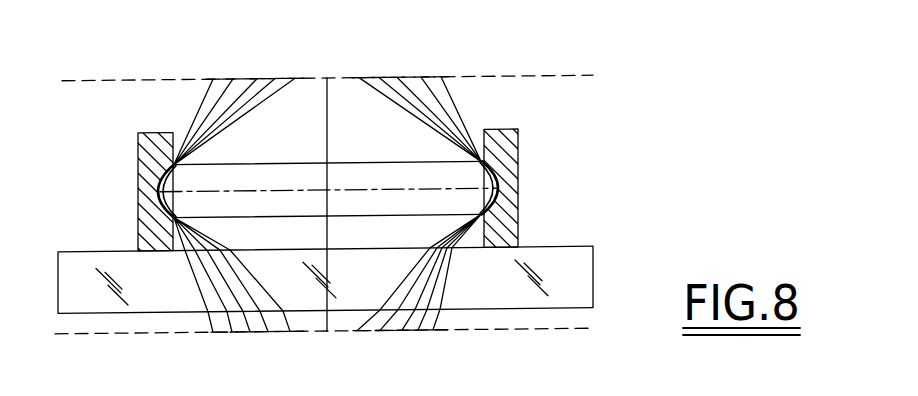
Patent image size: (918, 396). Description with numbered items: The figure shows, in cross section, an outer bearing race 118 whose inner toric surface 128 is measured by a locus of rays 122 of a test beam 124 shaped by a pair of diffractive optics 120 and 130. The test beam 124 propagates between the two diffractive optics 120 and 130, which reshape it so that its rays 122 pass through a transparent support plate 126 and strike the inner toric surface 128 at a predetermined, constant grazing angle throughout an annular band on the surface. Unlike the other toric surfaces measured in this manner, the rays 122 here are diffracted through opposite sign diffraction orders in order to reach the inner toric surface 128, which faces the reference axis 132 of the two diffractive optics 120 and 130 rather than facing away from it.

The outer bearing race 118 is at (512, 152).
The diffractive optic 120 is at (140, 332).
The rays 122 is at (460, 105).
The test beam 124 is at (391, 104).
The support plate 126 is at (117, 259).
The inner toric surface 128 is at (289, 177).
The diffractive optic 130 is at (168, 78).
The reference axis 132 is at (320, 78).